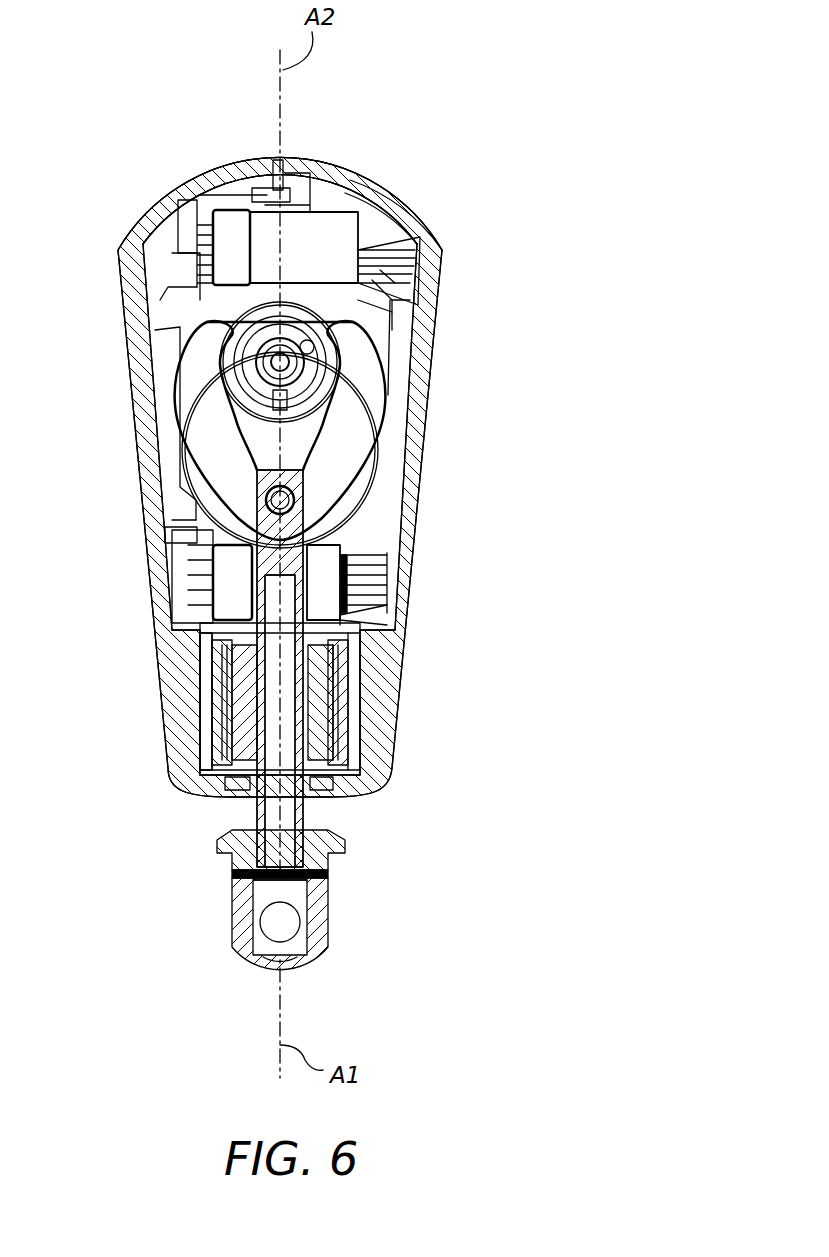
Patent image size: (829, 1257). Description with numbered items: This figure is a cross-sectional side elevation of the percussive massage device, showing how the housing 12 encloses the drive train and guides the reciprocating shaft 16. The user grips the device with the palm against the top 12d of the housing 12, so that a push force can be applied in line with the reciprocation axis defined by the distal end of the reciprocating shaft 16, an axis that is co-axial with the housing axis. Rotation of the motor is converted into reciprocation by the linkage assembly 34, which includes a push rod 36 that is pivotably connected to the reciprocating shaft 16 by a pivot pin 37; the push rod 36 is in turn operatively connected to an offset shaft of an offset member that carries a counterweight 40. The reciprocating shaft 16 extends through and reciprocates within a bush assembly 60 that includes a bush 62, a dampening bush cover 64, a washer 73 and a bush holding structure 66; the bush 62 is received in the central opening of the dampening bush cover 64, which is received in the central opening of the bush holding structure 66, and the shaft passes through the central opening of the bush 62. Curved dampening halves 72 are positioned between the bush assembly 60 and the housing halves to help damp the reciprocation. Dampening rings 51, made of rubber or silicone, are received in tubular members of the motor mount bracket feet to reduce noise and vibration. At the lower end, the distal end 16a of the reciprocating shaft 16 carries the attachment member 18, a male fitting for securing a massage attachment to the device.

The housing 12 is at (405, 650).
The top of the housing 12d is at (283, 160).
The reciprocating shaft 16 is at (305, 815).
The distal end 16a is at (262, 905).
The attachment member 18 is at (332, 913).
The linkage assembly 34 is at (190, 392).
The push rod 36 is at (297, 440).
The pivot pin 37 is at (300, 363).
The counterweight 40 is at (362, 398).
The dampening rings 51 is at (347, 593).
The bush assembly 60 is at (392, 722).
The bush 62 is at (317, 737).
The dampening bush cover 64 is at (330, 672).
The bush holding structure 66 is at (220, 675).
The dampening halves 72 is at (205, 713).
The washer 73 is at (330, 785).